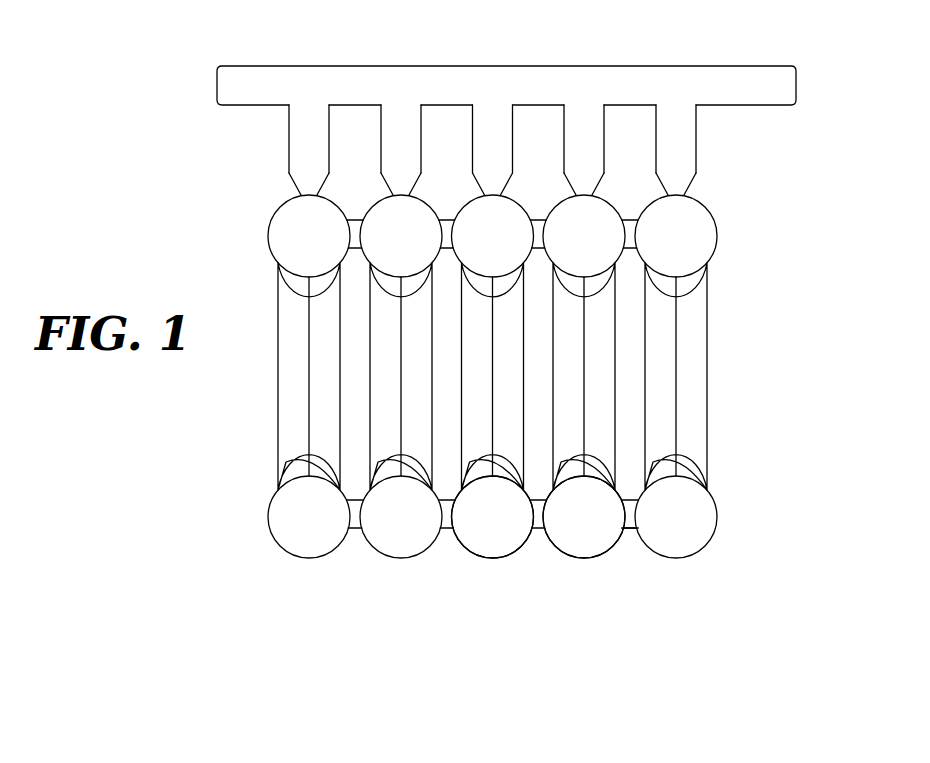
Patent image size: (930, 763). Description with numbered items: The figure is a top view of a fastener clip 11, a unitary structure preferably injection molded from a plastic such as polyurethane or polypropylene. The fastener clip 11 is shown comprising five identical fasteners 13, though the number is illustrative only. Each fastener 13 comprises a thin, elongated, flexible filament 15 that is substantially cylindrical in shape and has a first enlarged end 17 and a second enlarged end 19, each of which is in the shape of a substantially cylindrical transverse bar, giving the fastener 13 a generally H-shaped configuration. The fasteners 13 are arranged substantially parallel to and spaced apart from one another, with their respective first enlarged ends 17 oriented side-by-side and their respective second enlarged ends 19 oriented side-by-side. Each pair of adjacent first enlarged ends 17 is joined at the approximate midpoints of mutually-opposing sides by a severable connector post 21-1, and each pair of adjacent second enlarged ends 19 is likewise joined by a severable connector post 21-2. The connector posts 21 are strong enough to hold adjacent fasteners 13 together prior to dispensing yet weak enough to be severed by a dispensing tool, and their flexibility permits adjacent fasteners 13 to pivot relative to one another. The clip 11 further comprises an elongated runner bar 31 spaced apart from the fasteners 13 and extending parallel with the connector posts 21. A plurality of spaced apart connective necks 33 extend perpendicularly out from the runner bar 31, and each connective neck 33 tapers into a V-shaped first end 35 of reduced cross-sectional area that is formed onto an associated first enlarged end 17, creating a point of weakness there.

The fastener clip 11 is at (198, 513).
The fastener 13 is at (582, 572).
The filament 15 is at (287, 380).
The first enlarged end 17 is at (702, 222).
The second enlarged end 19 is at (407, 543).
The connector post 21 is at (631, 552).
The severable connector post 21-1 is at (448, 218).
The severable connector post 21-2 is at (356, 530).
The runner bar 31 is at (718, 72).
The connective neck 33 is at (515, 145).
The first end 35 is at (597, 188).